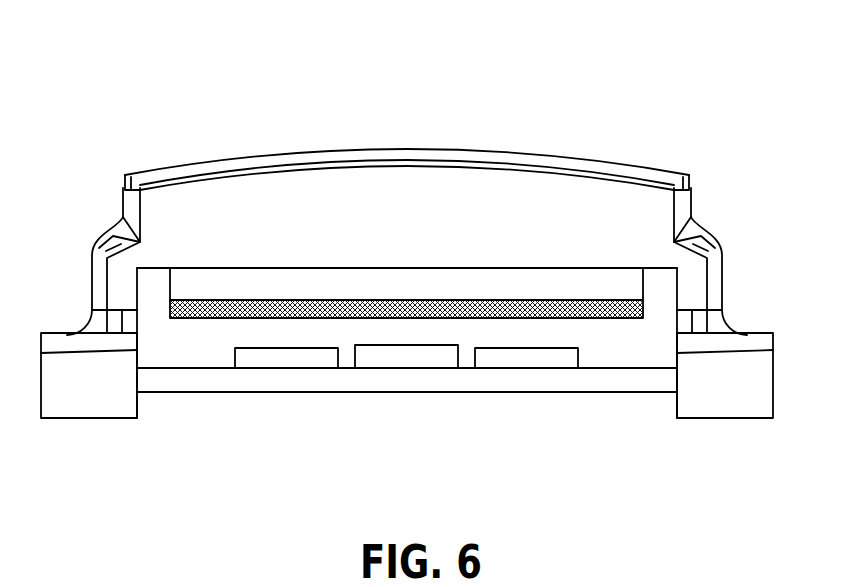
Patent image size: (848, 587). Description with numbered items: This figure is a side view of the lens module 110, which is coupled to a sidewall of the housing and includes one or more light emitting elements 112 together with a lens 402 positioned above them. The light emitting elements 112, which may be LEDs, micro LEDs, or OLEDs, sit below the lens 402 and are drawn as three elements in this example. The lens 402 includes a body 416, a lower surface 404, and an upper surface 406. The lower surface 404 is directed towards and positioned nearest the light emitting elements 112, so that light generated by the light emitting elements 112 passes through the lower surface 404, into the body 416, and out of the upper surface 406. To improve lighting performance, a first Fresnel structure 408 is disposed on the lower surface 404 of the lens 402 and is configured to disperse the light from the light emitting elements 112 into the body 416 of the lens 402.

The lens module 110 is at (131, 74).
The lens 402 is at (187, 220).
The lower surface 404 is at (193, 312).
The upper surface 406 is at (422, 153).
The first Fresnel structure 408 is at (642, 308).
The body 416 is at (643, 210).
The light emitting elements 112 is at (312, 357).